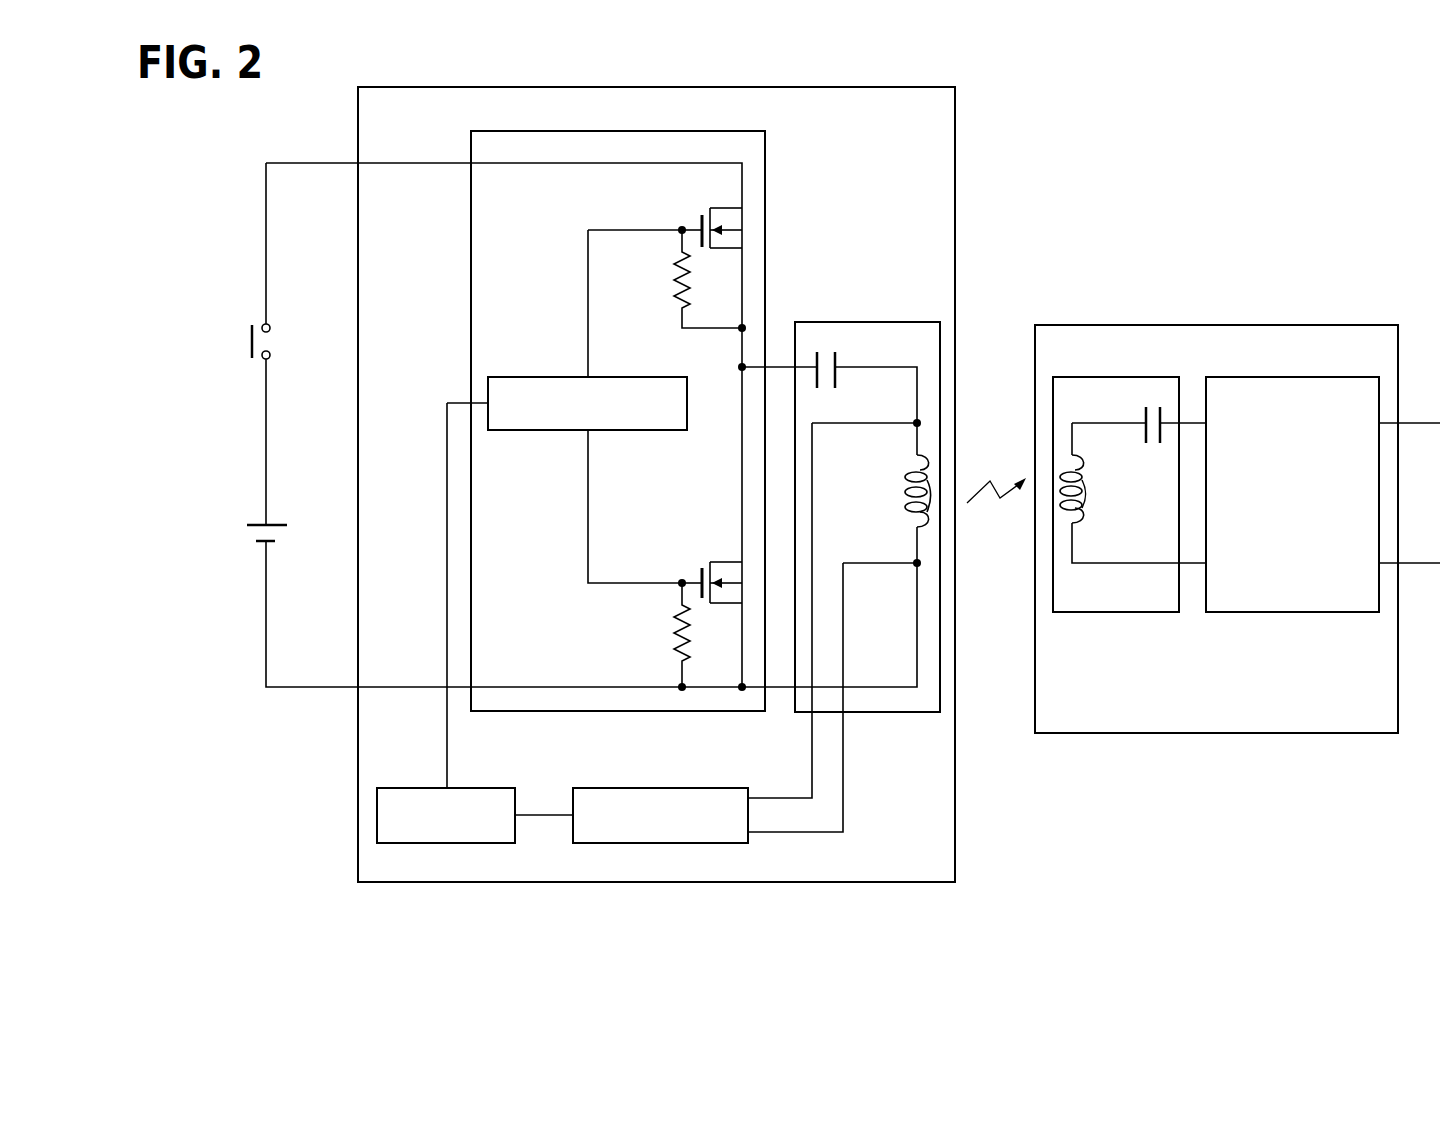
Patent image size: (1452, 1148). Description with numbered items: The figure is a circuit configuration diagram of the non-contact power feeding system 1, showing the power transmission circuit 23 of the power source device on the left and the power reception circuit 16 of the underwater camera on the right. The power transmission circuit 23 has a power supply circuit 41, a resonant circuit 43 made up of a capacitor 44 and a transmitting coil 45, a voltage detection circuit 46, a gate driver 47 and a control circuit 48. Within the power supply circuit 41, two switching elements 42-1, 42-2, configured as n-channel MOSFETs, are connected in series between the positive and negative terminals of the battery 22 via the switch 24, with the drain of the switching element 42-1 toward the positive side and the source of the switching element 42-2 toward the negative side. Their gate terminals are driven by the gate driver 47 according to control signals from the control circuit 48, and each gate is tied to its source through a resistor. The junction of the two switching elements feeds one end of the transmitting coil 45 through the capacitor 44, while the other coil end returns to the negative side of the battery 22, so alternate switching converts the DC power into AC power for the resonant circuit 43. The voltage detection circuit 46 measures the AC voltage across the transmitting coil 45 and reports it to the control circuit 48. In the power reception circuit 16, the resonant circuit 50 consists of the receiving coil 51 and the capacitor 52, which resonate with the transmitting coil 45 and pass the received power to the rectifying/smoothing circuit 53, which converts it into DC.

The non-contact power feeding system 1 is at (1308, 886).
The power reception circuit 16 is at (1293, 735).
The battery 22 is at (245, 533).
The power transmission circuit 23 is at (898, 884).
The switch 24 is at (245, 337).
The power supply circuit 41 is at (737, 712).
The switching element 42-1 is at (738, 218).
The switching element 42-2 is at (723, 558).
The resonant circuit 43 is at (900, 713).
The capacitor 44 is at (843, 353).
The transmitting coil 45 is at (898, 482).
The voltage detection circuit 46 is at (708, 845).
The gate driver 47 is at (520, 372).
The control circuit 48 is at (458, 845).
The resonant circuit 50 is at (1147, 614).
The receiving coil 51 is at (1092, 508).
The capacitor 52 is at (1153, 448).
The rectifying/smoothing circuit 53 is at (1348, 614).